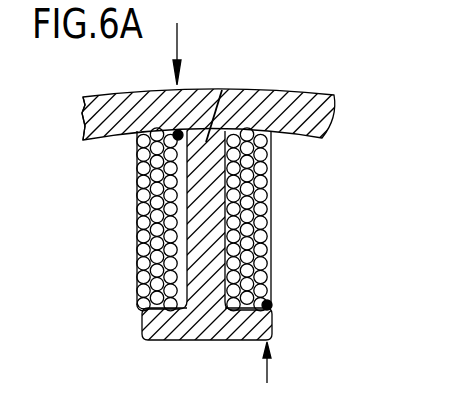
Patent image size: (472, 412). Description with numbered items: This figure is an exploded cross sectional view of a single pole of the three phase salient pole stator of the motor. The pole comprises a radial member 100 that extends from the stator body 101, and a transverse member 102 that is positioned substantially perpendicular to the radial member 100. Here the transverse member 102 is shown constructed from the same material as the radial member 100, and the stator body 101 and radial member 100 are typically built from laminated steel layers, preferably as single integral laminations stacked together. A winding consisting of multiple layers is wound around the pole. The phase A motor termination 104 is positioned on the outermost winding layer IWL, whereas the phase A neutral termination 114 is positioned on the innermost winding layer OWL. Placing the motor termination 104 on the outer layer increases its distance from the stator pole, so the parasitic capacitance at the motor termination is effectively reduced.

The radial member 100 is at (267, 92).
The stator body 101 is at (147, 117).
The transverse member 102 is at (212, 318).
The phase A motor termination 104 is at (270, 302).
The phase A neutral termination 114 is at (222, 90).
The outermost winding layer IWL is at (195, 53).
The innermost winding layer OWL is at (290, 367).